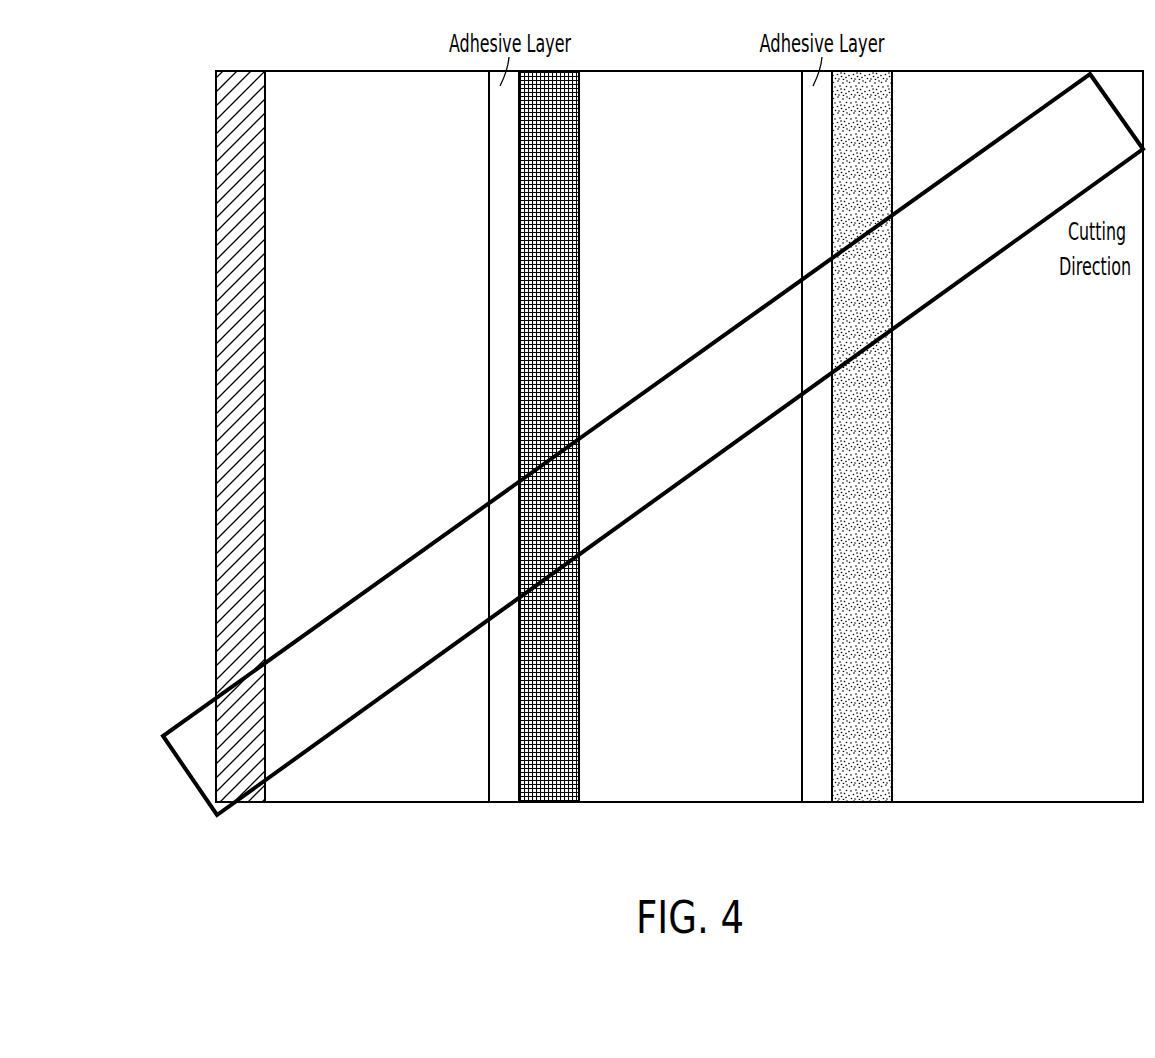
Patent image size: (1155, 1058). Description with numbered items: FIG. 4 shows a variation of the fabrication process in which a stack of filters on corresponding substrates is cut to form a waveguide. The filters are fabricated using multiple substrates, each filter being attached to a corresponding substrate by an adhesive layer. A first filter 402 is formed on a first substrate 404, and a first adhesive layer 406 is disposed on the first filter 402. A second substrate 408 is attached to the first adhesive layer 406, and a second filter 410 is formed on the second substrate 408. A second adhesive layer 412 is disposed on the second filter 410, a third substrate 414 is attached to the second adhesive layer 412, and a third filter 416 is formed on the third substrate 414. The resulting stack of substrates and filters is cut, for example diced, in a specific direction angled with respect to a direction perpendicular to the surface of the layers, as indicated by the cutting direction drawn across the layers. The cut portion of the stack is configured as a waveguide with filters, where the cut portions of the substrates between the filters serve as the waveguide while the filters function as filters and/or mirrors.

The first filter 402 is at (1036, 788).
The first substrate 404 is at (866, 786).
The first adhesive layer 406 is at (822, 790).
The second substrate 408 is at (688, 784).
The second filter 410 is at (565, 786).
The second adhesive layer 412 is at (511, 790).
The third substrate 414 is at (358, 79).
The third filter 416 is at (238, 76).